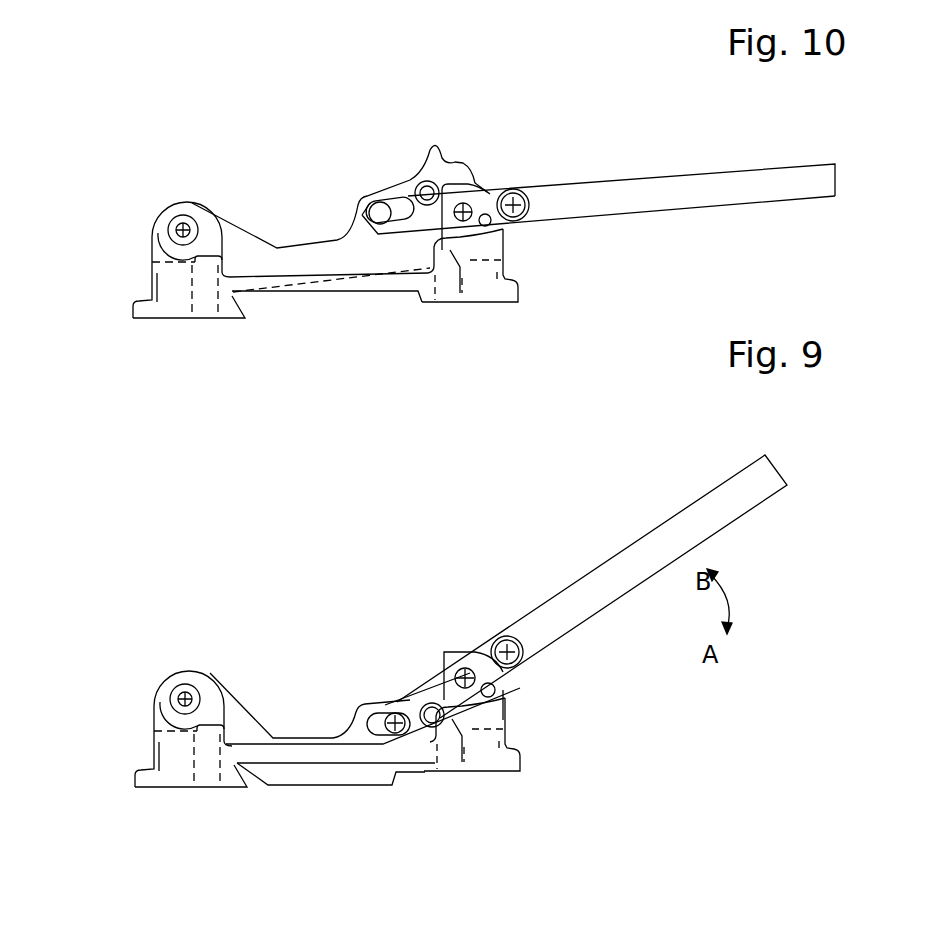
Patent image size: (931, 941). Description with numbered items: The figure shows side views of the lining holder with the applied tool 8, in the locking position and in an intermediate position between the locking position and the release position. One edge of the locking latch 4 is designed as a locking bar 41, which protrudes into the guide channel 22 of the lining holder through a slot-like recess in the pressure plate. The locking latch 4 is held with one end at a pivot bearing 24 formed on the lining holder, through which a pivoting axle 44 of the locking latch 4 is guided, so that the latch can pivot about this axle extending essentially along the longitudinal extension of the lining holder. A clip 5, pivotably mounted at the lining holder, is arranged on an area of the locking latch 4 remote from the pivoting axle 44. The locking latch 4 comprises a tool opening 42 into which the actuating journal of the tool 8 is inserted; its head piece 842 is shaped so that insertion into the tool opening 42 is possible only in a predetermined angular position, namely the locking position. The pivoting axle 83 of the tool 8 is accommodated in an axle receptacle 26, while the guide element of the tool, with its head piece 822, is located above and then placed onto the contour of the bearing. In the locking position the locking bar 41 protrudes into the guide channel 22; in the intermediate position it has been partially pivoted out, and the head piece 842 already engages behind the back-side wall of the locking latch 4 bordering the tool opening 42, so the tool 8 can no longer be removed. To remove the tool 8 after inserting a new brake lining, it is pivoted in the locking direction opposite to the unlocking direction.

In FIG. 10, the locking latch 4 is at (237, 253).
In FIG. 9, the locking latch 4 is at (233, 718).
In FIG. 10, the clip 5 is at (423, 188).
In FIG. 9, the clip 5 is at (430, 711).
In FIG. 9, the tool 8 is at (761, 528).
In FIG. 10, the guide channel 22 is at (283, 316).
In FIG. 9, the guide channel 22 is at (402, 781).
In FIG. 10, the pivot bearing 24 is at (172, 220).
In FIG. 9, the pivot bearing 24 is at (173, 682).
In FIG. 10, the axle receptacle 26 is at (492, 223).
In FIG. 9, the axle receptacle 26 is at (497, 688).
In FIG. 9, the locking bar 41 is at (330, 788).
In FIG. 10, the tool opening 42 is at (395, 207).
In FIG. 10, the pivoting axle 44 is at (173, 232).
In FIG. 9, the pivoting axle 44 is at (172, 703).
In FIG. 10, the pivoting axle 83 is at (467, 205).
In FIG. 9, the pivoting axle 83 is at (463, 670).
In FIG. 10, the head piece 822 is at (518, 202).
In FIG. 9, the head piece 822 is at (510, 637).
In FIG. 9, the head piece 842 is at (393, 720).